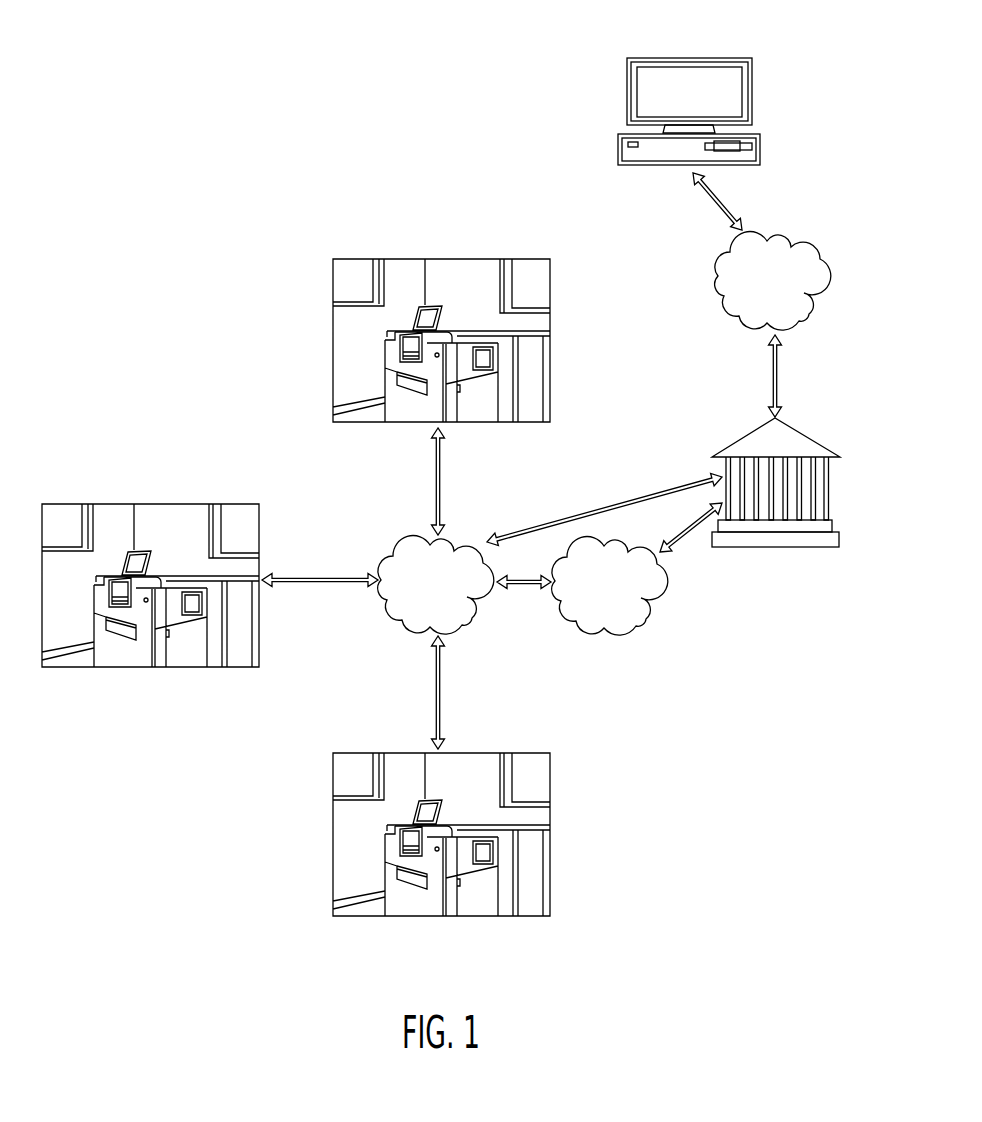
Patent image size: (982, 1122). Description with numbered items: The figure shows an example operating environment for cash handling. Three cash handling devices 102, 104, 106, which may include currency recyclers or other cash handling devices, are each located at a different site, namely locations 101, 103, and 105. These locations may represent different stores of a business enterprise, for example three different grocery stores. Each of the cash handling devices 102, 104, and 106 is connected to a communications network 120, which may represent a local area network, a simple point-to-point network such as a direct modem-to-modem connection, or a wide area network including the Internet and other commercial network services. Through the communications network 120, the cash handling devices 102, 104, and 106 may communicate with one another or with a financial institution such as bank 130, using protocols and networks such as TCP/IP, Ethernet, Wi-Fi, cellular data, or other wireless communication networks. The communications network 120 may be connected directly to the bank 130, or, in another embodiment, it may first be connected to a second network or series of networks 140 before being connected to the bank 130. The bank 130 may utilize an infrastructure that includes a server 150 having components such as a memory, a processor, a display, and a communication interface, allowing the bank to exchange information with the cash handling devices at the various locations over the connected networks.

The location 101 is at (455, 270).
The cash handling device 102 is at (407, 405).
The location 103 is at (163, 513).
The cash handling device 104 is at (106, 653).
The location 105 is at (343, 822).
The cash handling device 106 is at (408, 905).
The communications network 120 is at (470, 620).
The bank 130 is at (748, 437).
The series of networks 140 is at (612, 634).
The server 150 is at (721, 57).